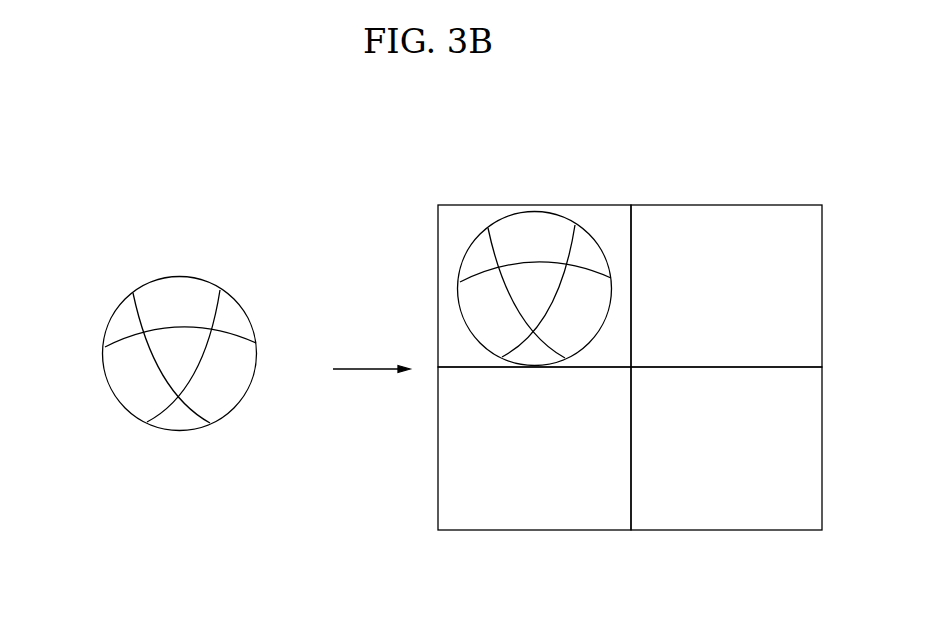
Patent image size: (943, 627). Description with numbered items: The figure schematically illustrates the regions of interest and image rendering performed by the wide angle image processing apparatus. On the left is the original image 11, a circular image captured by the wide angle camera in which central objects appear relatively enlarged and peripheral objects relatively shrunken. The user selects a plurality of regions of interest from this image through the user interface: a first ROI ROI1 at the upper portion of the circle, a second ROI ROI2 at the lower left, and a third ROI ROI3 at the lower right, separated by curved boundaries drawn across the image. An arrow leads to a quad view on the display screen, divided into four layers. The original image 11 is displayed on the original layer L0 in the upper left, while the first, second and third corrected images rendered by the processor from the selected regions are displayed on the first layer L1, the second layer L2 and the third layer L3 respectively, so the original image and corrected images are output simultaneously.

The original image 11 is at (178, 432).
The first ROI ROI1 is at (178, 287).
The second ROI ROI2 is at (122, 385).
The third ROI ROI3 is at (240, 383).
The original layer L0 is at (587, 204).
The first layer L1 is at (731, 204).
The second layer L2 is at (536, 532).
The third layer L3 is at (725, 532).